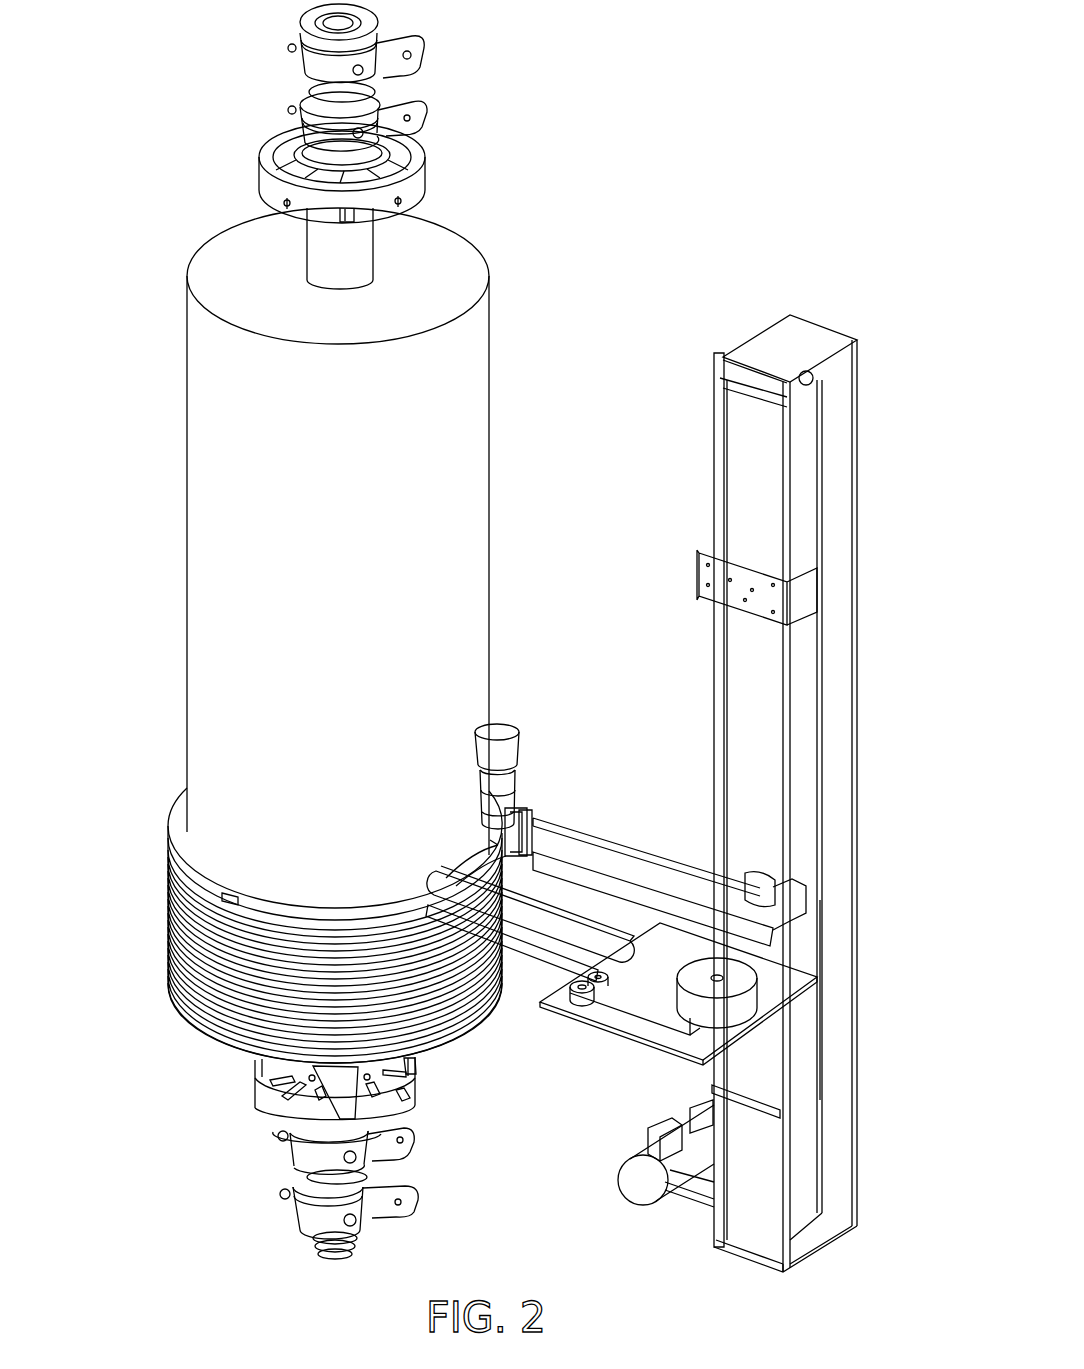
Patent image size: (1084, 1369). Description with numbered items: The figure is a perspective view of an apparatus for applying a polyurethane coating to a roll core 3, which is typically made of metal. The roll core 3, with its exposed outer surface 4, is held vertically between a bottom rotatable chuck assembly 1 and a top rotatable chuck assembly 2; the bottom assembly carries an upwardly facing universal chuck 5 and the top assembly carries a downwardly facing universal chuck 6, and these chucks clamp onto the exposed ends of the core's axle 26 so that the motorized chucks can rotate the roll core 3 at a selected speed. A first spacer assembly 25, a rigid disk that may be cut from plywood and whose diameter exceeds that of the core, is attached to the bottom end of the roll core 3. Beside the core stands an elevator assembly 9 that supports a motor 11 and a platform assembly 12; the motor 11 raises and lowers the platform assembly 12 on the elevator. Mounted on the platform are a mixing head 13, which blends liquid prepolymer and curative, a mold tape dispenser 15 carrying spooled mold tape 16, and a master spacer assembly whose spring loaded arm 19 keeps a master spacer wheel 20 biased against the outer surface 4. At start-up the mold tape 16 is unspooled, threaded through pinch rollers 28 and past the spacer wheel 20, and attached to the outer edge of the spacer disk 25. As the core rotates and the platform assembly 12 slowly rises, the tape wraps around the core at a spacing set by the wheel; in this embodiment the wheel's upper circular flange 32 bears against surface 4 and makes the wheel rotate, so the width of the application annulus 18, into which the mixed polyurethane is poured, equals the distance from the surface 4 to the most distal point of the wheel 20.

The bottom rotatable chuck assembly 1 is at (310, 1212).
The top rotatable chuck assembly 2 is at (405, 28).
The roll core 3 is at (489, 380).
The exposed outer surface 4 is at (352, 675).
The upwardly facing universal chuck 5 is at (262, 1100).
The downwardly facing universal chuck 6 is at (433, 180).
The elevator assembly 9 is at (808, 742).
The motor 11 is at (632, 1182).
The platform assembly 12 is at (650, 1027).
The mixing head 13 is at (520, 752).
The mold tape dispenser 15 is at (838, 1032).
The mold tape 16 is at (530, 965).
The application annulus 18 is at (178, 802).
The spring loaded arm 19 is at (510, 906).
The master spacer wheel 20 is at (382, 906).
The first spacer assembly 25 is at (425, 1060).
The axle 26 is at (373, 286).
The pinch rollers 28 is at (625, 982).
The upper circular flange 32 is at (425, 893).